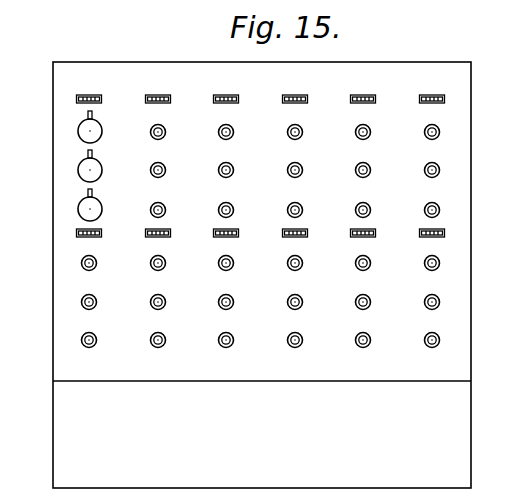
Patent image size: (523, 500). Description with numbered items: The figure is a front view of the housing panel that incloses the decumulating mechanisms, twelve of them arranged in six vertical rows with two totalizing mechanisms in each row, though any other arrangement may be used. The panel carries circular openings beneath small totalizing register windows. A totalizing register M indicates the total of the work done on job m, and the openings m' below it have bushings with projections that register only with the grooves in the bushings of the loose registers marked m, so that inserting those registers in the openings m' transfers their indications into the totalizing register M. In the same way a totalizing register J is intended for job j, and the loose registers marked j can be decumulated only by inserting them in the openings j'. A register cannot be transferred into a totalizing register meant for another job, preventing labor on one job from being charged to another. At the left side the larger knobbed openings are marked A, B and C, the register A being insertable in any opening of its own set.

The register A is at (88, 131).
The switch knob B is at (88, 170).
The switch knob C is at (88, 209).
The totalizing register M is at (158, 95).
The totalizing register J is at (297, 95).
The openings m' is at (172, 171).
The openings j' is at (303, 152).